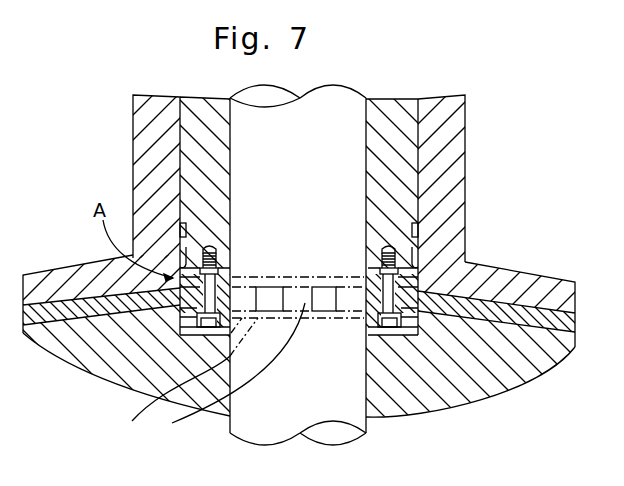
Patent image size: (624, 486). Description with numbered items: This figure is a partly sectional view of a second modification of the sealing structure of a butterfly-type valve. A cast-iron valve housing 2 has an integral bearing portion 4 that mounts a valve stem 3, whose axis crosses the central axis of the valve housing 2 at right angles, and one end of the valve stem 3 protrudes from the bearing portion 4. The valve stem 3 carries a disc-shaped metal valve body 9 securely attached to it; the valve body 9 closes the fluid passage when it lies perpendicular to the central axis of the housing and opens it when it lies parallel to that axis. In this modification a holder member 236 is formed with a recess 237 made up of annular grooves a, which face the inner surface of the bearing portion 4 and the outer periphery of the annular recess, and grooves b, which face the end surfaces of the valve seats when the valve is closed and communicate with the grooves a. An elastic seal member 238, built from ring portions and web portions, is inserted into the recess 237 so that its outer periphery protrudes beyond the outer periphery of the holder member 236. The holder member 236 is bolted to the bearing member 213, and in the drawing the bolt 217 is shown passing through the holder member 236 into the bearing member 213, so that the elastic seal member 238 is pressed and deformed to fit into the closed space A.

The valve housing 2 is at (80, 270).
The valve stem 3 is at (348, 100).
The bearing portion 4 is at (458, 181).
The valve body 9 is at (472, 397).
The bearing member 213 is at (412, 146).
The right bolt assembly 217 is at (437, 330).
The holder member 236 is at (467, 262).
The recess 237 is at (165, 437).
The elastic seal member 238 is at (175, 325).